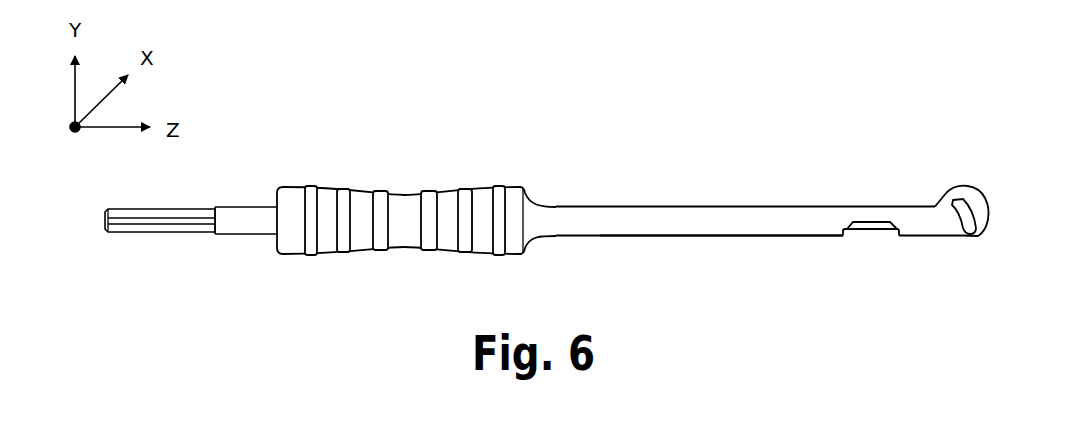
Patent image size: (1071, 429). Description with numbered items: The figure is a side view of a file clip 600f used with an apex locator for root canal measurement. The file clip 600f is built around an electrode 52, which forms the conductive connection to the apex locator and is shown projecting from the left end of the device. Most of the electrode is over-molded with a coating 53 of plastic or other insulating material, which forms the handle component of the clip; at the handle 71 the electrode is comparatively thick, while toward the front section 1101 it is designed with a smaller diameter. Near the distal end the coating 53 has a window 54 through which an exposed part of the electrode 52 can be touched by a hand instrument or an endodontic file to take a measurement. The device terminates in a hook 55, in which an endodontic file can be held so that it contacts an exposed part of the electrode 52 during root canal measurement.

The electrode 52 is at (178, 218).
The handle 71 is at (463, 190).
The coating 53 is at (577, 215).
The file clip 600f is at (702, 174).
The front section 1101 is at (706, 246).
The window 54 is at (869, 230).
The hook 55 is at (967, 237).